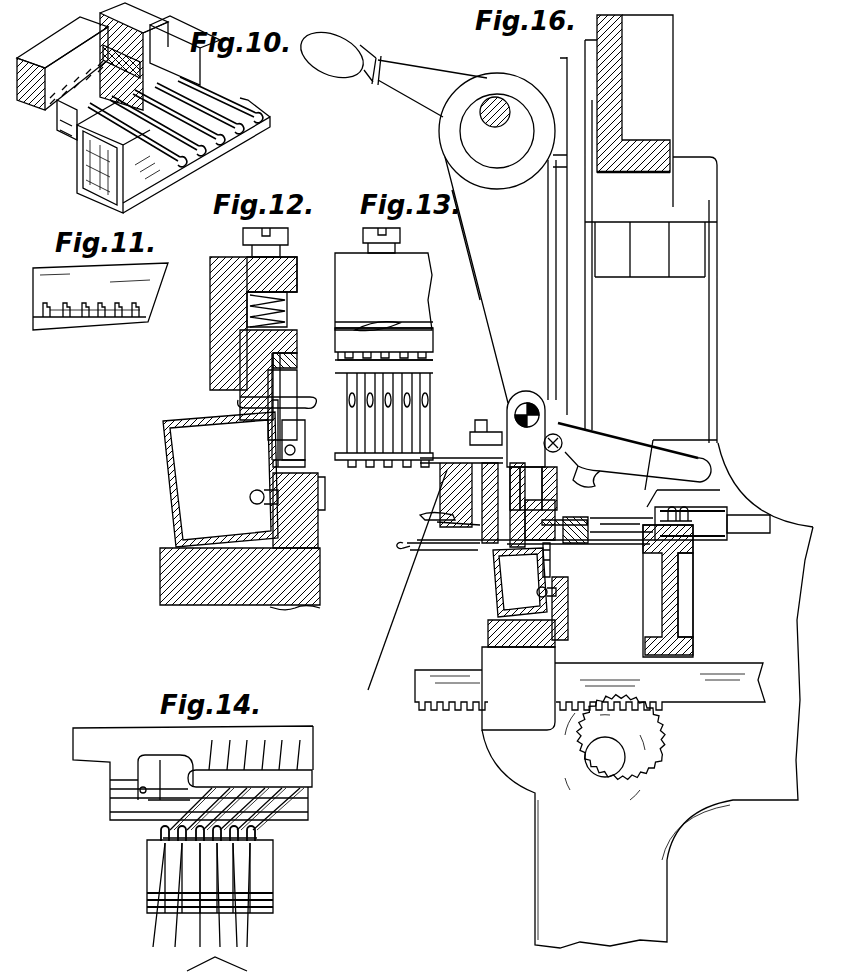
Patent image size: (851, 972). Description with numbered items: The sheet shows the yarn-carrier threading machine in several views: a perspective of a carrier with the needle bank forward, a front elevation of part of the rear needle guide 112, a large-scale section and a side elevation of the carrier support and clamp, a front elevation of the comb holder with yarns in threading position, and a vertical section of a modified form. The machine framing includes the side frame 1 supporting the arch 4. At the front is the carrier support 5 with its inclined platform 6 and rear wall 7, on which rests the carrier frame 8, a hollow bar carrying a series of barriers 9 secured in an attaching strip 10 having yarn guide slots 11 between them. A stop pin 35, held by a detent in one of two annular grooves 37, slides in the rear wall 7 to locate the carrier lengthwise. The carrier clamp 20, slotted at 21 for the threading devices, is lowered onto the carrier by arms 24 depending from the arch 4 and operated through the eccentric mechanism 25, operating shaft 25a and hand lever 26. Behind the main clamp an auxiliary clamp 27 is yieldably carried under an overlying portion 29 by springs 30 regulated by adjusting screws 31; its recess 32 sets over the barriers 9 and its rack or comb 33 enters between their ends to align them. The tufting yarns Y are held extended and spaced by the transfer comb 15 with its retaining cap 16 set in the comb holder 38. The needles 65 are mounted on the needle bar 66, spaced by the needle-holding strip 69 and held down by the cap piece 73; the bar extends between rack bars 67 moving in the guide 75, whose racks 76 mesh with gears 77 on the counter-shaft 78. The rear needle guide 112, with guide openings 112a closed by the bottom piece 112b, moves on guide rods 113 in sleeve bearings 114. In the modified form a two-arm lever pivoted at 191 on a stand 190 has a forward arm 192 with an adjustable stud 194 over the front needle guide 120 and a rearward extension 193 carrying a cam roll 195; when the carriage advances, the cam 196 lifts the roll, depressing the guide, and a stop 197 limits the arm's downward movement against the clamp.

In FIG. 16, the side frame 1 is at (760, 788).
In FIG. 16, the arch 4 is at (660, 98).
In FIG. 12, the yarn carrier support 5 is at (295, 619).
In FIG. 12, the platform 6 is at (175, 570).
In FIG. 16, the platform 6 is at (488, 632).
In FIG. 12, the rear wall 7 is at (305, 533).
In FIG. 14, the rear wall 7 is at (236, 964).
In FIG. 16, the rear wall 7 is at (568, 625).
In FIG. 10, the carrier frame 8 is at (240, 100).
In FIG. 12, the carrier frame 8 is at (163, 460).
In FIG. 14, the carrier frame 8 is at (273, 882).
In FIG. 16, the carrier frame 8 is at (493, 594).
In FIG. 10, the barriers 9 is at (62, 128).
In FIG. 12, the barriers 9 is at (273, 456).
In FIG. 13, the barriers 9 is at (388, 462).
In FIG. 16, the barriers 9 is at (553, 558).
In FIG. 10, the attaching strip 10 is at (67, 138).
In FIG. 12, the attaching strip 10 is at (270, 441).
In FIG. 13, the attaching strip 10 is at (433, 368).
In FIG. 16, the attaching strip 10 is at (543, 568).
In FIG. 13, the yarn guide slots 11 is at (430, 397).
In FIG. 14, the transfer comb 15 is at (138, 781).
In FIG. 14, the retaining cap 16 is at (312, 778).
In FIG. 16, the retaining cap 16 is at (437, 525).
In FIG. 10, the carrier clamp 20 is at (178, 68).
In FIG. 12, the carrier clamp 20 is at (232, 256).
In FIG. 13, the carrier clamp 20 is at (418, 255).
In FIG. 16, the carrier clamp 20 is at (515, 548).
In FIG. 10, the clamp slot 21 is at (193, 78).
In FIG. 12, the clamp slot 21 is at (222, 405).
In FIG. 16, the arms 24 is at (523, 327).
In FIG. 16, the eccentric mechanism 25 is at (470, 136).
In FIG. 16, the operating shaft 25a is at (490, 98).
In FIG. 16, the hand lever 26 is at (333, 62).
In FIG. 10, the auxiliary clamp 27 is at (100, 50).
In FIG. 12, the auxiliary clamp 27 is at (240, 371).
In FIG. 13, the auxiliary clamp 27 is at (425, 336).
In FIG. 16, the auxiliary clamp 27 is at (540, 510).
In FIG. 12, the overlying portion 29 is at (283, 276).
In FIG. 13, the overlying portion 29 is at (418, 318).
In FIG. 12, the springs 30 is at (287, 300).
In FIG. 13, the springs 30 is at (380, 324).
In FIG. 13, the adjusting screws 31 is at (365, 236).
In FIG. 10, the recess 32 is at (133, 70).
In FIG. 12, the recess 32 is at (281, 345).
In FIG. 12, the rack or comb 33 is at (297, 357).
In FIG. 13, the rack or comb 33 is at (433, 356).
In FIG. 12, the stop pin 35 is at (250, 495).
In FIG. 16, the stop pin 35 is at (538, 593).
In FIG. 14, the annular grooves 37 is at (322, 964).
In FIG. 14, the comb holder 38 is at (92, 745).
In FIG. 16, the comb holder 38 is at (452, 470).
In FIG. 10, the needles 65 is at (233, 100).
In FIG. 14, the needles 65 is at (160, 835).
In FIG. 16, the needles 65 is at (407, 547).
In FIG. 12, the needle bar 66 is at (298, 380).
In FIG. 16, the needle bar 66 is at (690, 594).
In FIG. 16, the rack bars 67 is at (735, 666).
In FIG. 16, the needle-holding strip 69 is at (645, 555).
In FIG. 16, the cap piece 73 is at (682, 530).
In FIG. 16, the guide 75 is at (425, 513).
In FIG. 16, the racks 76 is at (470, 708).
In FIG. 16, the gears 77 is at (570, 768).
In FIG. 16, the counter-shaft 78 is at (615, 755).
In FIG. 10, the rear needle guide 112 is at (52, 122).
In FIG. 11, the rear needle guide 112 is at (143, 290).
In FIG. 16, the rear needle guide 112 is at (590, 518).
In FIG. 11, the guide openings 112a is at (101, 316).
In FIG. 11, the bottom piece 112b is at (60, 322).
In FIG. 16, the guide rods 113 is at (745, 522).
In FIG. 16, the sleeve bearings 114 is at (715, 515).
In FIG. 14, the front needle guide 120 is at (258, 835).
In FIG. 16, the front needle guide 120 is at (475, 548).
In FIG. 16, the stand 190 is at (570, 440).
In FIG. 16, the pivot 191 is at (555, 434).
In FIG. 16, the forward arm 192 is at (500, 428).
In FIG. 16, the rearward extension 193 is at (650, 458).
In FIG. 16, the adjustable stud 194 is at (474, 438).
In FIG. 16, the cam roll 195 is at (705, 466).
In FIG. 16, the cam 196 is at (712, 496).
In FIG. 16, the stop 197 is at (585, 488).
In FIG. 14, the tufting yarns Y is at (305, 746).
In FIG. 16, the tufting yarns Y is at (403, 608).